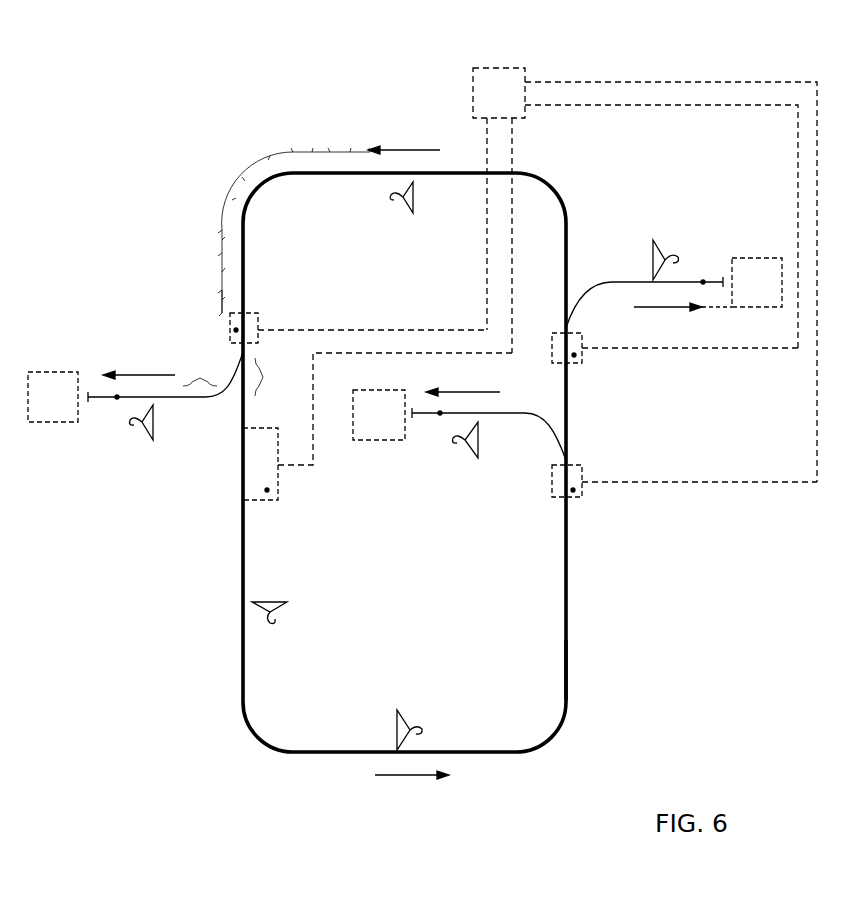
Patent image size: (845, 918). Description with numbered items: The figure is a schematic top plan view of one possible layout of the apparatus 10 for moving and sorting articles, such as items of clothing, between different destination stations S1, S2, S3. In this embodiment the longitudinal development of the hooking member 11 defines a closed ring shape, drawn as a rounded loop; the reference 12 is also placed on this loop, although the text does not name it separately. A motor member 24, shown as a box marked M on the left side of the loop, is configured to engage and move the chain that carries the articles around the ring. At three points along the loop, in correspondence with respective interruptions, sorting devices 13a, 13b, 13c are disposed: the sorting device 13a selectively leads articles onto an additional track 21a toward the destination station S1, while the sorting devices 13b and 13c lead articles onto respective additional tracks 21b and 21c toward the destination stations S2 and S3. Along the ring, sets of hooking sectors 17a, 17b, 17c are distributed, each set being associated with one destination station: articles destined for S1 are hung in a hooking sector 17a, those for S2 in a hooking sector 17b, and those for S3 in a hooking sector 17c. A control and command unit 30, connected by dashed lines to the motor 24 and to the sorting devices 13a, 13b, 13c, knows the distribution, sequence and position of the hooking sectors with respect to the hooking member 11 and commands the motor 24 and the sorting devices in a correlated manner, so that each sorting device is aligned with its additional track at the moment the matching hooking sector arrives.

The apparatus 10 is at (200, 102).
The hooking member 11 is at (567, 610).
The conveyor rail 12 is at (567, 670).
The sorting device 13a is at (232, 328).
The sorting device 13b is at (573, 490).
The sorting device 13c is at (574, 355).
The hooking sectors 17a is at (272, 257).
The hooking sectors 17b is at (252, 259).
The hooking sectors 17c is at (271, 220).
The additional track 21a is at (117, 397).
The additional track 21b is at (440, 413).
The additional track 21c is at (703, 282).
The motor member 24 is at (267, 490).
The control and command unit 30 is at (537, 275).
The destination station S1 is at (135, 387).
The destination station S2 is at (459, 424).
The destination station S3 is at (674, 293).